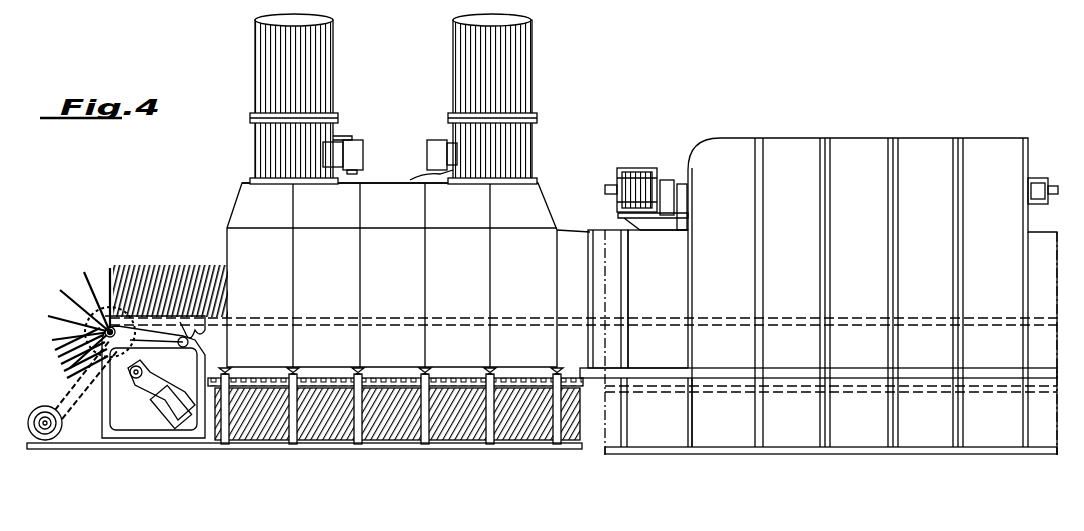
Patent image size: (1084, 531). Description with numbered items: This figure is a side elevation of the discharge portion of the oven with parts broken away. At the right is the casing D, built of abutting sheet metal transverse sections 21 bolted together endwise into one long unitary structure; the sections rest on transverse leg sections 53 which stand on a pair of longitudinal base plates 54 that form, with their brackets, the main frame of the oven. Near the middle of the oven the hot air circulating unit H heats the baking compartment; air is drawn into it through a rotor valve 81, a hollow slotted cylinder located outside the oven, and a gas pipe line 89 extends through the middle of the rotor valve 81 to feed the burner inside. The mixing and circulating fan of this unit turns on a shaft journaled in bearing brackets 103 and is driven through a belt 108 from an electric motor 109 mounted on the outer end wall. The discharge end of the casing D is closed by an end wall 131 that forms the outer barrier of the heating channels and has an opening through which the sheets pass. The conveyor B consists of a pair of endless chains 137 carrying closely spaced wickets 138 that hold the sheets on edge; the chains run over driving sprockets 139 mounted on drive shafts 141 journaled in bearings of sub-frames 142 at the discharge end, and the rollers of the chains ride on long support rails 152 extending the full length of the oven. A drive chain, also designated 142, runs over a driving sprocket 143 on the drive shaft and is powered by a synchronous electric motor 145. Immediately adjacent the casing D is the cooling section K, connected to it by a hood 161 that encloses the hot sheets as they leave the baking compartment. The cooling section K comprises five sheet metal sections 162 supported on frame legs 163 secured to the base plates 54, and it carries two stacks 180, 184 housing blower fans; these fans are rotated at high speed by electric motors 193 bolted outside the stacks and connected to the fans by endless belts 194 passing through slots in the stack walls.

The sheet metal transverse sections 21 is at (975, 160).
The transverse leg sections 53 is at (890, 432).
The longitudinal base plates 54 is at (780, 452).
The rotor valve 81 is at (1041, 178).
The pipe line 89 is at (1054, 188).
The bearing brackets 103 is at (682, 182).
The belt 108 is at (667, 180).
The electric motor 109 is at (637, 170).
The end wall 131 is at (588, 288).
The endless chains 137 is at (387, 376).
The wickets 138 is at (331, 438).
The driving sprockets 139 is at (92, 313).
The drive shafts 141 is at (104, 332).
The sub-frames / chain 142 is at (60, 392).
The driving sprocket 143 is at (107, 312).
The synchronous electric motors 145 is at (50, 440).
The support rails 152 is at (205, 325).
The hood 161 is at (570, 253).
The sheet metal sections 162 is at (320, 217).
The frame legs 163 is at (427, 438).
The stack 180 is at (330, 62).
The stack 184 is at (515, 62).
The electric motors 193 is at (364, 157).
The endless belts 194 is at (338, 135).
The conveyor B is at (153, 263).
The casing D is at (672, 258).
The hot air circulating unit H is at (846, 136).
The cooling casing / cooling section K is at (543, 208).